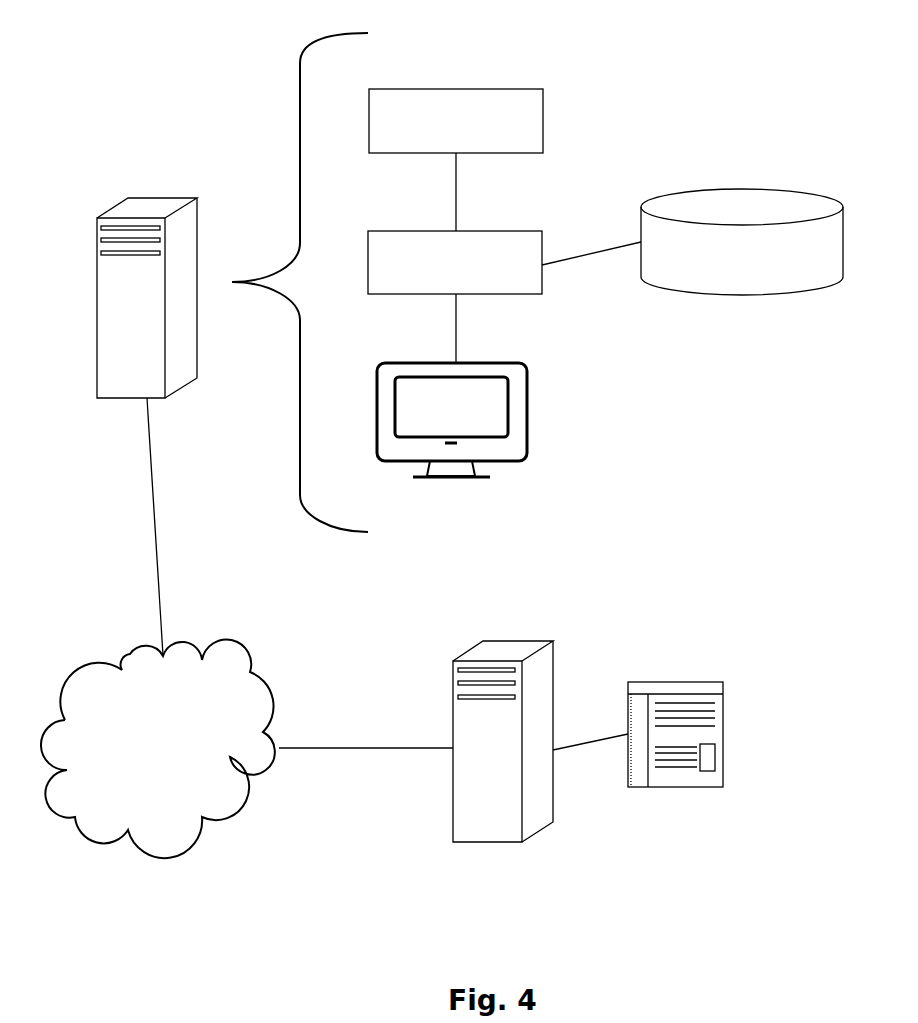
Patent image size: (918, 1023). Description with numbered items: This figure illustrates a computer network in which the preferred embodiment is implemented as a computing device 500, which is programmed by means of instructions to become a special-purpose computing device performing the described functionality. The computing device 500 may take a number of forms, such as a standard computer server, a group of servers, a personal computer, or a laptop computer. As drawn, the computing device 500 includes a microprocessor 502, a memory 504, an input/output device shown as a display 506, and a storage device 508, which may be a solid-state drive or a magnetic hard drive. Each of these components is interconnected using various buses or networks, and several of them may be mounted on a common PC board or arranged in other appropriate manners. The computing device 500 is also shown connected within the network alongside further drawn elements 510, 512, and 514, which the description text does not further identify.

The computing device 500 is at (158, 196).
The microprocessor 502 is at (505, 294).
The memory 504 is at (505, 89).
The display 506 is at (527, 405).
The storage device 508 is at (788, 188).
The network cloud 510 is at (127, 648).
The client server computer 512 is at (527, 641).
The document / web page 514 is at (700, 682).